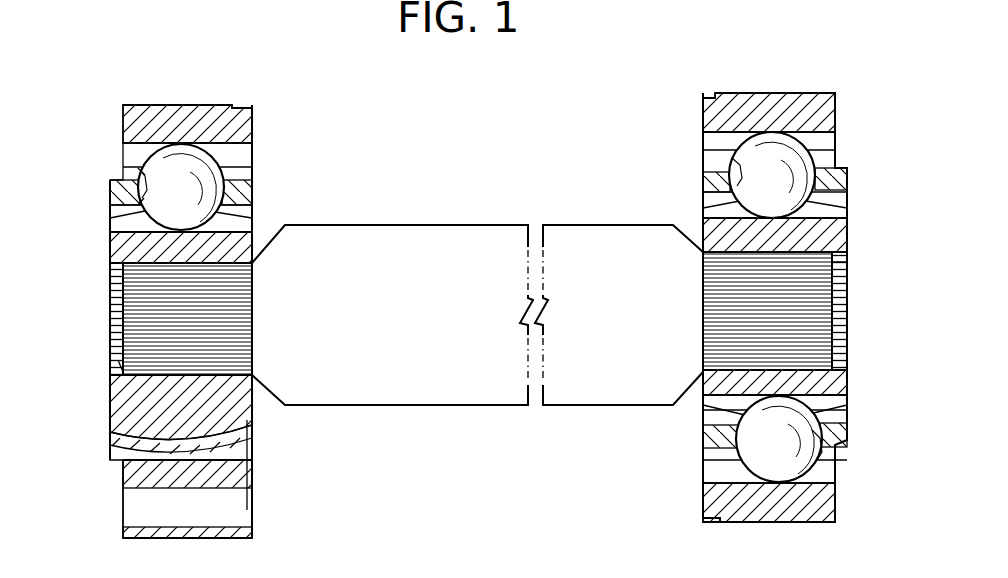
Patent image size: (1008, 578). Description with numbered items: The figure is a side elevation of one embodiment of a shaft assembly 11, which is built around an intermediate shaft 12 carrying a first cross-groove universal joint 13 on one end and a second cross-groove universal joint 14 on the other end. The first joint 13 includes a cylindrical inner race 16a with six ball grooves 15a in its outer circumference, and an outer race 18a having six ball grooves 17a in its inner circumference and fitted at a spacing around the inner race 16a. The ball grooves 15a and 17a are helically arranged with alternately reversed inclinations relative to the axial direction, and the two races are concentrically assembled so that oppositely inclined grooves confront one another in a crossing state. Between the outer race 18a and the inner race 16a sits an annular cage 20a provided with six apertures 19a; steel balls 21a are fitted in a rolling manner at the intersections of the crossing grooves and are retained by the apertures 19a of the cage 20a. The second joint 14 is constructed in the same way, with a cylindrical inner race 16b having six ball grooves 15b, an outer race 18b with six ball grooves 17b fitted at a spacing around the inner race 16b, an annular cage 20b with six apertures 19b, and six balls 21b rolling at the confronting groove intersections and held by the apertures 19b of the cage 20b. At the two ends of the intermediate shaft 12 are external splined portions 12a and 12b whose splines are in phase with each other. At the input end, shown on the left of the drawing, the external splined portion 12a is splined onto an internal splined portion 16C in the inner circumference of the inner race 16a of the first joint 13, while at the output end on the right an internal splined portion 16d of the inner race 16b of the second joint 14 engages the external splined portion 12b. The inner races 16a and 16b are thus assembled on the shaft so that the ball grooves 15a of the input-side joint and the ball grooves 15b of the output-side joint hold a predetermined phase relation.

The shaft assembly 11 is at (500, 113).
The intermediate shaft 12 is at (449, 240).
The external splined portion 12a is at (147, 290).
The external splined portion 12b is at (807, 317).
The first cross-groove universal joint 13 is at (216, 85).
The second cross-groove universal joint 14 is at (793, 79).
The ball grooves 15a is at (227, 223).
The ball grooves 15b is at (820, 210).
The inner race 16a is at (230, 405).
The inner race 16b is at (820, 375).
The internal splined portion 16C is at (122, 367).
The internal splined portion 16d is at (843, 253).
The ball grooves 17a is at (225, 150).
The ball grooves 17b is at (812, 140).
The outer race 18a is at (233, 477).
The outer race 18b is at (763, 507).
The apertures 19a is at (150, 168).
The apertures 19b is at (743, 167).
The annular cage 20a is at (250, 180).
The annular cage 20b is at (842, 170).
The steel balls 21a is at (175, 158).
The balls 21b is at (767, 148).